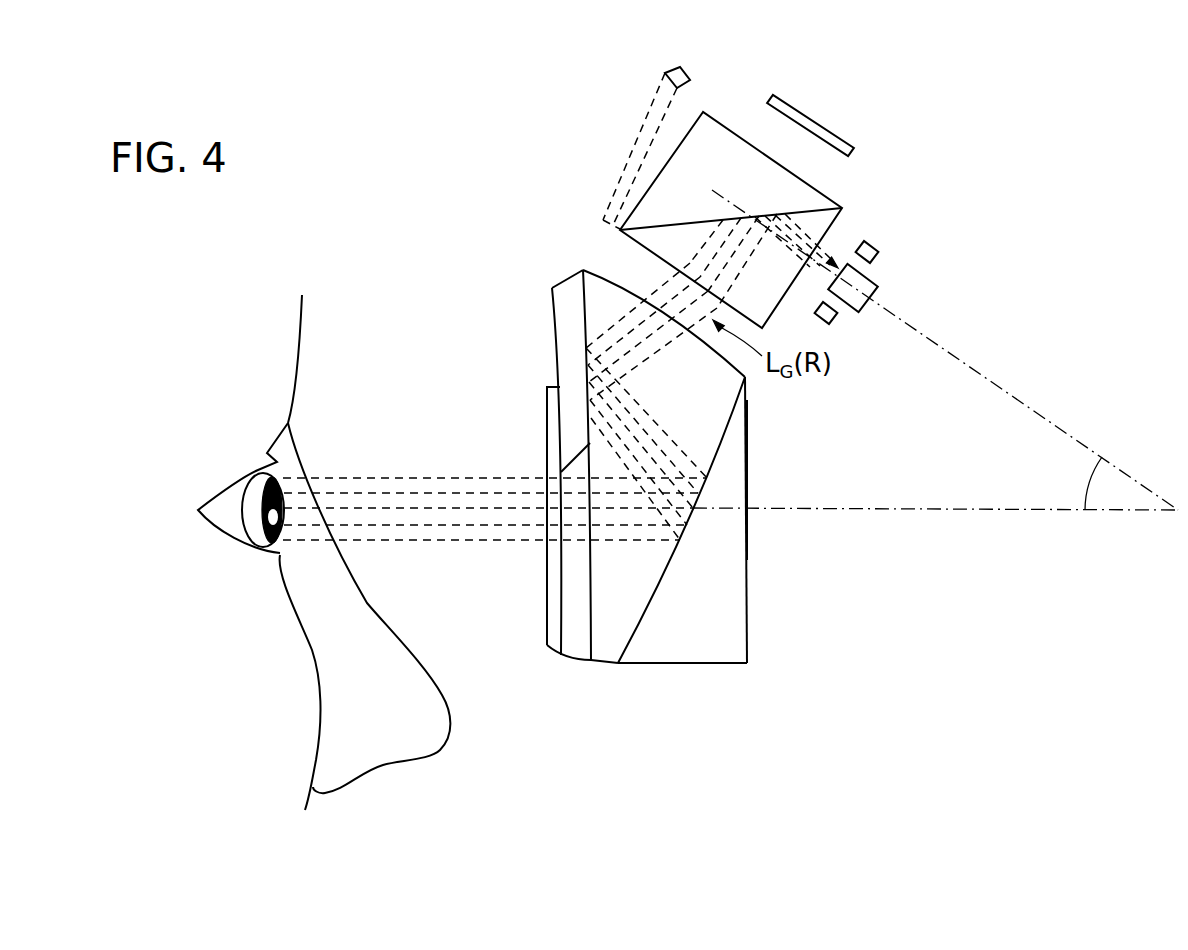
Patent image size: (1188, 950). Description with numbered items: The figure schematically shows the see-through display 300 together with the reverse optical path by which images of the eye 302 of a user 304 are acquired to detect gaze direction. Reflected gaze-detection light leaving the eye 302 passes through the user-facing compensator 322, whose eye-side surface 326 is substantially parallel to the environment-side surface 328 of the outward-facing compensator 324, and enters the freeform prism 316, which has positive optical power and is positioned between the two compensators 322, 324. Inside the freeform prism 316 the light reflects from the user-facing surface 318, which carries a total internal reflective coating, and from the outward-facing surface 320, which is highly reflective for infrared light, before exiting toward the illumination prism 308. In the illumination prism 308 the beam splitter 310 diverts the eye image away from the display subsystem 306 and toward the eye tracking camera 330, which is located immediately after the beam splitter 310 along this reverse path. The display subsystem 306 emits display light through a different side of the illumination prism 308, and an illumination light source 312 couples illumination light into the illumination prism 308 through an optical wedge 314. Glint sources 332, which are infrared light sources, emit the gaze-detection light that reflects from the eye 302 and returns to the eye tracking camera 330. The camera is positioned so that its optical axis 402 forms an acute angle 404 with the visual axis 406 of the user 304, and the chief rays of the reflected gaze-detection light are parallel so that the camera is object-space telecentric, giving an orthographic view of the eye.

The see-through display 300 is at (758, 691).
The eye 302 is at (232, 520).
The user 304 is at (254, 354).
The display subsystem 306 is at (871, 113).
The illumination prism 308 is at (709, 92).
The beam splitter 310 is at (807, 203).
The illumination light source 312 is at (679, 66).
The optical wedge 314 is at (630, 112).
The freeform prism 316 is at (634, 447).
The user-facing surface 318 is at (558, 325).
The outward-facing surface 320 is at (732, 425).
The user-facing compensator 322 is at (535, 400).
The outward-facing compensator 324 is at (759, 463).
The eye-side surface 326 is at (548, 585).
The environment-side surface 328 is at (750, 580).
The eye tracking camera 330 is at (890, 270).
The glint sources 332 is at (891, 229).
The optical axis 402 is at (1002, 392).
The acute angle 404 is at (1057, 470).
The visual axis 406 is at (962, 512).